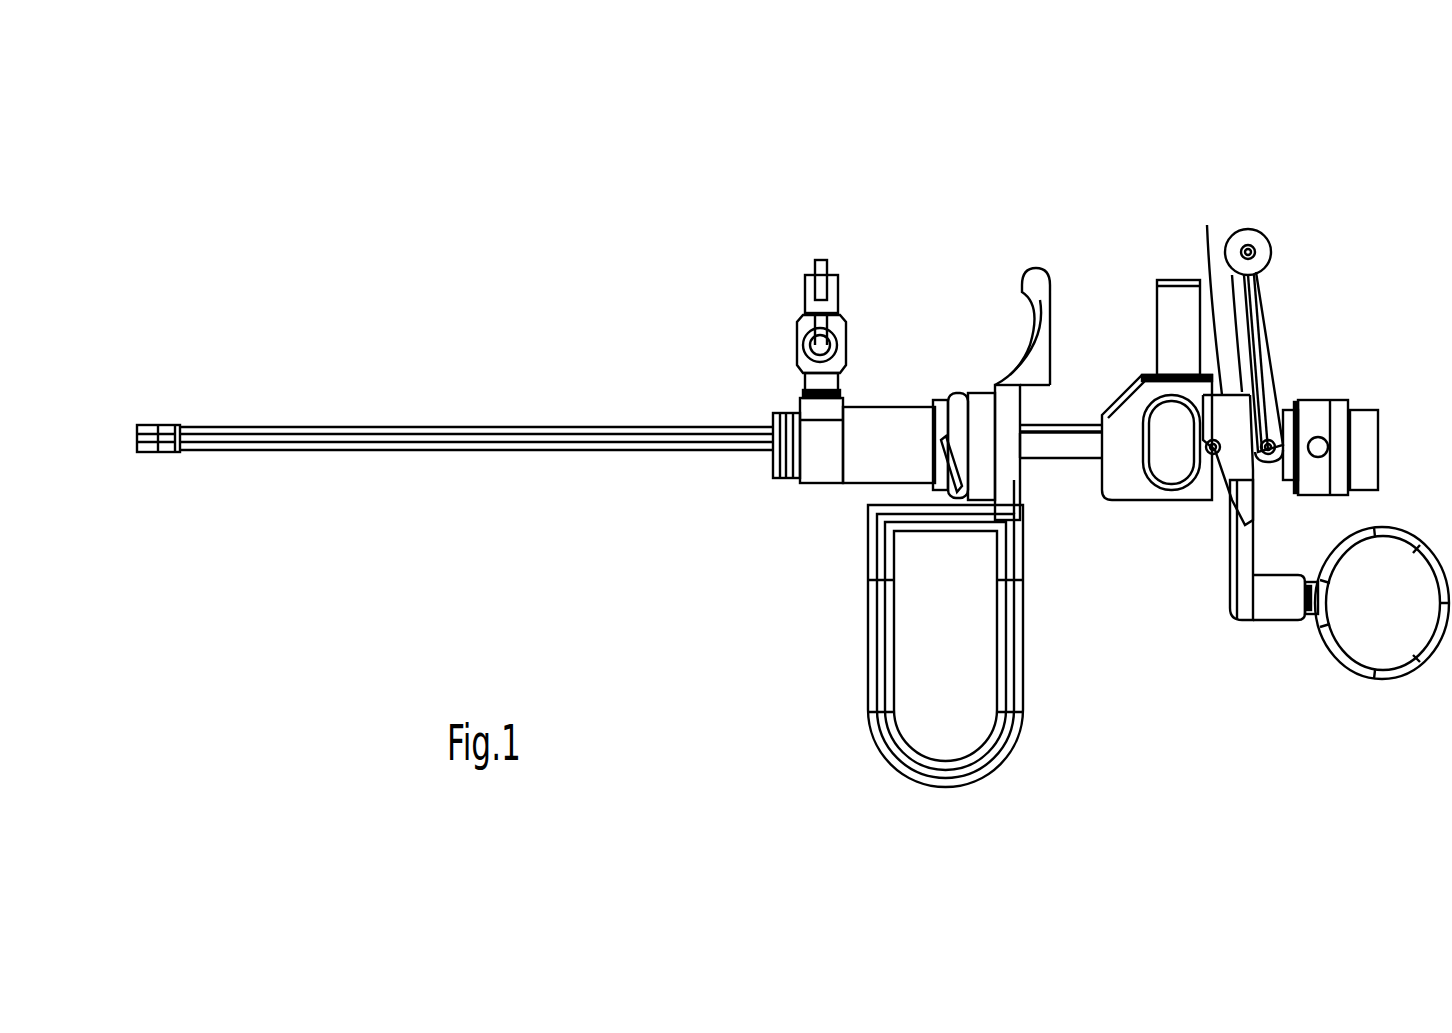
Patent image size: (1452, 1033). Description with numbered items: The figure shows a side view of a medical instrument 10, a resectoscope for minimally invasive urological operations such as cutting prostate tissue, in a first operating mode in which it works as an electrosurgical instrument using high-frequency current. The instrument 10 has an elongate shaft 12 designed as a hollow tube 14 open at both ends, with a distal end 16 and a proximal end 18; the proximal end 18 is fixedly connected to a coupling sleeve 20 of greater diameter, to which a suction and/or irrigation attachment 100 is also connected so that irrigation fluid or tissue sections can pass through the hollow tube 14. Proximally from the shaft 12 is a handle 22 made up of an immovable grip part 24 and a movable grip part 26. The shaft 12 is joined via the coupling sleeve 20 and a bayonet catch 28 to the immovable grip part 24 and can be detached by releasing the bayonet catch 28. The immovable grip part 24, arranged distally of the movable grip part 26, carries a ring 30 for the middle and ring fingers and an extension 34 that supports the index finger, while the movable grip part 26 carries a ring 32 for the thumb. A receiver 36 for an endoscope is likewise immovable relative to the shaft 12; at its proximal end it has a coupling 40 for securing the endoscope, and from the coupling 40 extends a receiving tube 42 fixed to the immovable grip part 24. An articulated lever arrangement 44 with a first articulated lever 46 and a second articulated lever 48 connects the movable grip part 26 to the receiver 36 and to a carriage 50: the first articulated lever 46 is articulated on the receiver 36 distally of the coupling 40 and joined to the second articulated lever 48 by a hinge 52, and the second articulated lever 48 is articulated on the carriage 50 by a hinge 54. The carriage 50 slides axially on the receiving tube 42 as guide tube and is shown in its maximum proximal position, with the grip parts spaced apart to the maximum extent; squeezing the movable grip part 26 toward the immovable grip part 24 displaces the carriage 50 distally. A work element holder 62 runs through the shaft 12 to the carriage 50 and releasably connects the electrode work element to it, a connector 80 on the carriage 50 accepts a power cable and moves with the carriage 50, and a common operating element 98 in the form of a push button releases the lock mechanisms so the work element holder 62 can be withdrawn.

The medical instrument 10 is at (702, 222).
The shaft 12 is at (426, 424).
The hollow tube 14 is at (530, 424).
The distal end 16 is at (140, 422).
The proximal end 18 is at (776, 466).
The coupling sleeve 20 is at (868, 470).
The handle 22 is at (1168, 695).
The immovable grip part 24 is at (1054, 668).
The movable grip part 26 is at (1292, 654).
The bayonet catch 28 is at (950, 400).
The ring 30 is at (871, 668).
The ring 32 is at (1392, 682).
The extension 34 is at (1040, 300).
The receiver for an endoscope 36 is at (1318, 360).
The coupling 40 is at (1337, 410).
The receiving tube 42 is at (1062, 455).
The articulated lever arrangement 44 is at (1283, 282).
The first articulated lever 46 is at (1278, 355).
The second articulated lever 48 is at (1216, 290).
The carriage 50 is at (1126, 485).
The hinge 52 is at (1258, 236).
The hinge 54 is at (1228, 492).
The work element holder 62 is at (1058, 425).
The connector 80 is at (1165, 330).
The common operating element 98 is at (1172, 470).
The suction and/or irrigation attachment 100 is at (805, 300).